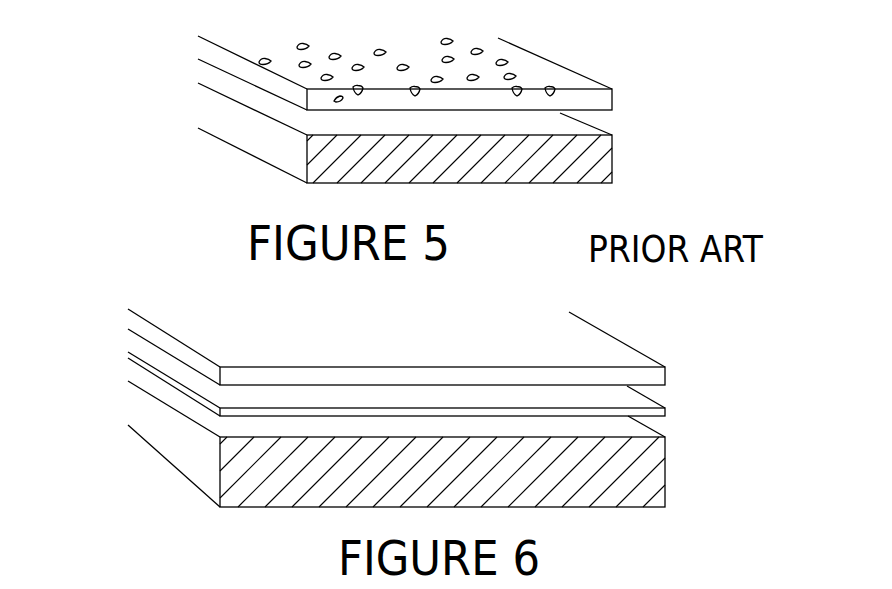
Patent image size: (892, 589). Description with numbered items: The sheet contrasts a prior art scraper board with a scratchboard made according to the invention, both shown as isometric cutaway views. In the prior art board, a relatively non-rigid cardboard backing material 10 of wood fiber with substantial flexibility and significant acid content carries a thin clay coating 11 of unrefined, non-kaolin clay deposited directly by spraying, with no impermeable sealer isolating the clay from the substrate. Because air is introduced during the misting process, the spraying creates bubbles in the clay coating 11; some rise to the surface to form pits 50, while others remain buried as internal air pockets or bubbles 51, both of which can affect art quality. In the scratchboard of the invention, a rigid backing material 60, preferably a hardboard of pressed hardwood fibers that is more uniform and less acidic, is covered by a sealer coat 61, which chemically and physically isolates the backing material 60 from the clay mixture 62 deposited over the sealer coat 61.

In FIG. 5, the cardboard backing material 10 is at (243, 129).
In FIG. 5, the clay coating 11 is at (237, 63).
In FIG. 5, the pits 50 is at (358, 64).
In FIG. 5, the internal air pockets or bubbles 51 is at (340, 101).
In FIG. 6, the rigid backing material 60 is at (148, 425).
In FIG. 6, the sealer coat 61 is at (138, 365).
In FIG. 6, the clay mixture 62 is at (147, 329).